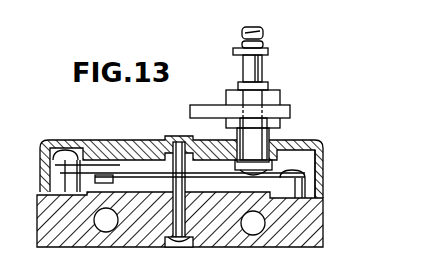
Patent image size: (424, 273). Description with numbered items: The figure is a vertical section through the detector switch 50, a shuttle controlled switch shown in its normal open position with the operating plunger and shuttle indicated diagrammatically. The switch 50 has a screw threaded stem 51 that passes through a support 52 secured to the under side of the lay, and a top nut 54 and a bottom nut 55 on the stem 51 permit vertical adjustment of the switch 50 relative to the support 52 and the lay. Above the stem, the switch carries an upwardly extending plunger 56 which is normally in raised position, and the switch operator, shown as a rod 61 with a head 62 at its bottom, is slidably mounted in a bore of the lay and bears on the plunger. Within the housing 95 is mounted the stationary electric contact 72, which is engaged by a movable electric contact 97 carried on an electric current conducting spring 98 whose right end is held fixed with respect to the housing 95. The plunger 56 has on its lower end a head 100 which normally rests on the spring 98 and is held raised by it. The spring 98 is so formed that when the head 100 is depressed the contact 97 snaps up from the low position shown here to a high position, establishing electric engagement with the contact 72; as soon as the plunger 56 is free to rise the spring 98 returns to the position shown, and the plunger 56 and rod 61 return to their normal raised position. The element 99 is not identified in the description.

The detector switch 50 is at (50, 215).
The screw threaded stem 51 is at (270, 86).
The support 52 is at (193, 109).
The top nut 54 is at (288, 98).
The bottom nut 55 is at (280, 126).
The plunger 56 is at (264, 66).
The rod 61 is at (240, 43).
The head 62 is at (262, 52).
The stationary electric contact 72 is at (117, 140).
The housing 95 is at (91, 138).
The movable electric contact 97 is at (110, 179).
The electric current conducting spring 98 is at (197, 177).
The right cavity element 99 is at (318, 175).
The head 100 is at (303, 153).